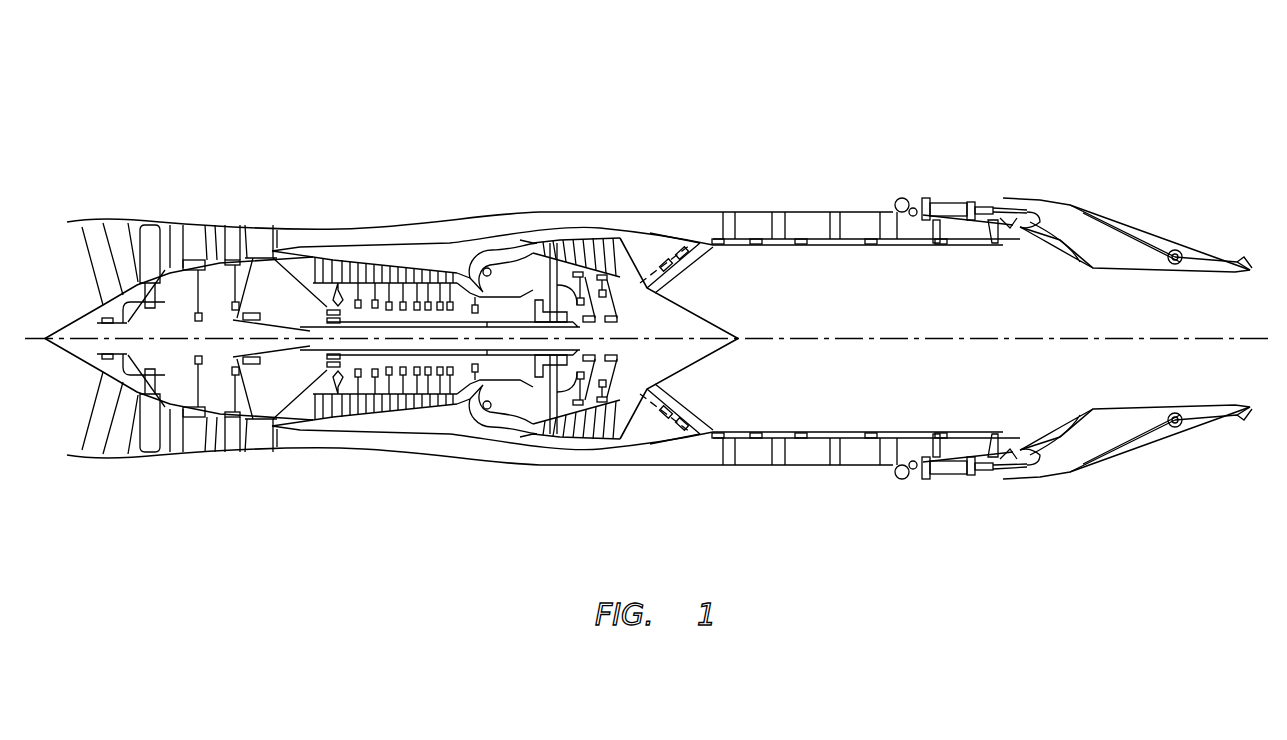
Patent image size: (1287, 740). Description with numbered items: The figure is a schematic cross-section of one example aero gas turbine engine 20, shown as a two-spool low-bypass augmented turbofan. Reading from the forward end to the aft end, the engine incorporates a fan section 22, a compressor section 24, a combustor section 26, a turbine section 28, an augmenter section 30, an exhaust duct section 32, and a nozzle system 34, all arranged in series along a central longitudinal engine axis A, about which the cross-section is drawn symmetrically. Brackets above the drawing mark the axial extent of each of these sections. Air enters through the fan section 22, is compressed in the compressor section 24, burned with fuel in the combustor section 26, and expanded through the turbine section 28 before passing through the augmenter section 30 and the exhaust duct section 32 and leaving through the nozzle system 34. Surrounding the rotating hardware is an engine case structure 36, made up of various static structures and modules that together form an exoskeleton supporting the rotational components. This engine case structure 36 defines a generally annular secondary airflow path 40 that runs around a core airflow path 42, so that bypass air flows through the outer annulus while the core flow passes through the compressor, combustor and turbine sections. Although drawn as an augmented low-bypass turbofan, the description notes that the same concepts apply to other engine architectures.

The gas turbine engine 20 is at (903, 62).
The fan section 22 is at (273, 152).
The compressor section 24 is at (480, 152).
The combustor section 26 is at (548, 152).
The turbine section 28 is at (548, 152).
The augmenter section 30 is at (622, 152).
The exhaust duct section 32 is at (1007, 152).
The nozzle system 34 is at (1007, 152).
The engine case structure 36 is at (575, 467).
The secondary airflow path 40 is at (350, 448).
The core airflow path 42 is at (275, 434).
The central longitudinal engine axis A is at (1008, 340).